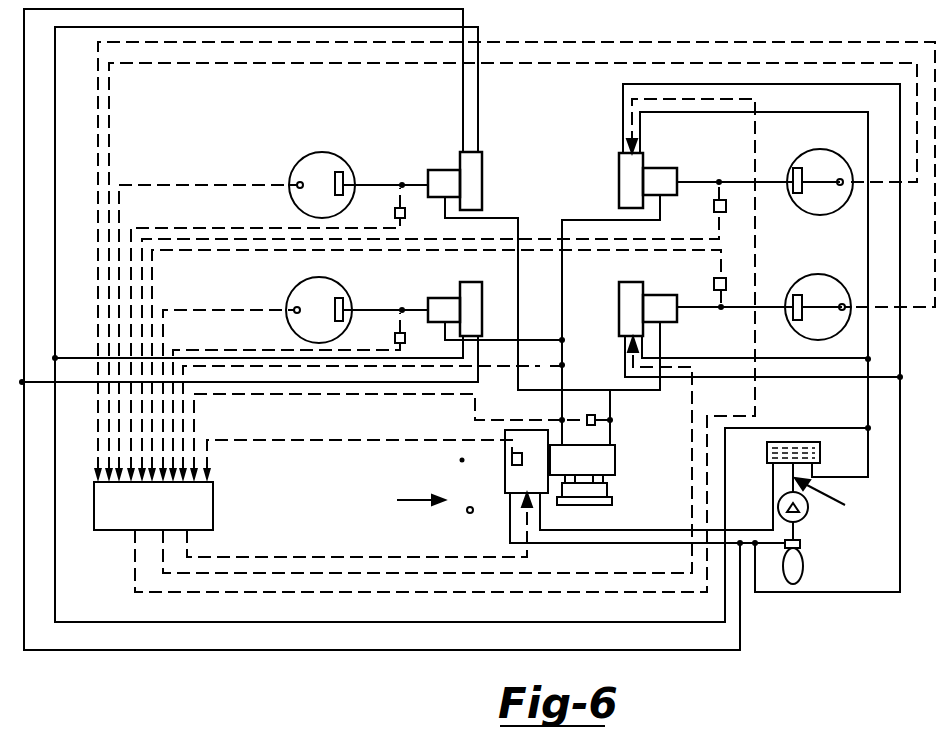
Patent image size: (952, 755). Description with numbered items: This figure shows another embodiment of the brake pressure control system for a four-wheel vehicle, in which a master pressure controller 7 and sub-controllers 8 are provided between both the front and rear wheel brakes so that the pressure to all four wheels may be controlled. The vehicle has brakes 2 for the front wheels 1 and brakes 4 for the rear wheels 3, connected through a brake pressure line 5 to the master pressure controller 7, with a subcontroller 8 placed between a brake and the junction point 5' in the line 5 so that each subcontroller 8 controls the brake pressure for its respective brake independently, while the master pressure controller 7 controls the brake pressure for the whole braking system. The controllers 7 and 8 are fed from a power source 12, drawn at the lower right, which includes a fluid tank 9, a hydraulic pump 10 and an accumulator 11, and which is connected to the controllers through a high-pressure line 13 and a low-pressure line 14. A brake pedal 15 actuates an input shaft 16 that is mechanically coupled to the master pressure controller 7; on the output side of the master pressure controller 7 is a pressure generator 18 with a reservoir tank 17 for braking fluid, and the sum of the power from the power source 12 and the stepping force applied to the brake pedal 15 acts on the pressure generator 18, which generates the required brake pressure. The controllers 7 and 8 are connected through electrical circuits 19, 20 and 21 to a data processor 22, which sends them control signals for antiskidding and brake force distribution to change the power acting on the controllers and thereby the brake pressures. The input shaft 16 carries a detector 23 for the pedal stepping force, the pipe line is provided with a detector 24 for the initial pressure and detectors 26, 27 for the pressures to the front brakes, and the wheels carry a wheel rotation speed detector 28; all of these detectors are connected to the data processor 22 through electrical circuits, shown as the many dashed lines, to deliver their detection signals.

The front wheel 1 is at (840, 188).
The brake 2 is at (800, 193).
The rear wheel 3 is at (297, 293).
The brake 4 is at (345, 297).
The brake pressure line 5 is at (589, 377).
The junction point 5' is at (598, 399).
The master pressure controller 7 is at (410, 505).
The subcontroller 8 is at (620, 298).
The fluid tank 9 is at (820, 452).
The hydraulic pump 10 is at (803, 515).
The accumulator 11 is at (800, 570).
The power source 12 is at (830, 496).
The high-pressure line 13 is at (858, 592).
The low-pressure line 14 is at (773, 480).
The brake pedal 15 is at (420, 411).
The input shaft 16 is at (512, 458).
The reservoir tank 17 is at (610, 492).
The pressure generator 18 is at (615, 460).
The electrical circuit 19 is at (330, 557).
The electrical circuit 20 is at (385, 573).
The electrical circuit 21 is at (413, 592).
The data processor 22 is at (160, 518).
The detector 23 is at (512, 463).
The detector 24 is at (587, 418).
The detector 26 is at (714, 284).
The detector 27 is at (714, 208).
The wheel rotation speed detector 28 is at (295, 309).